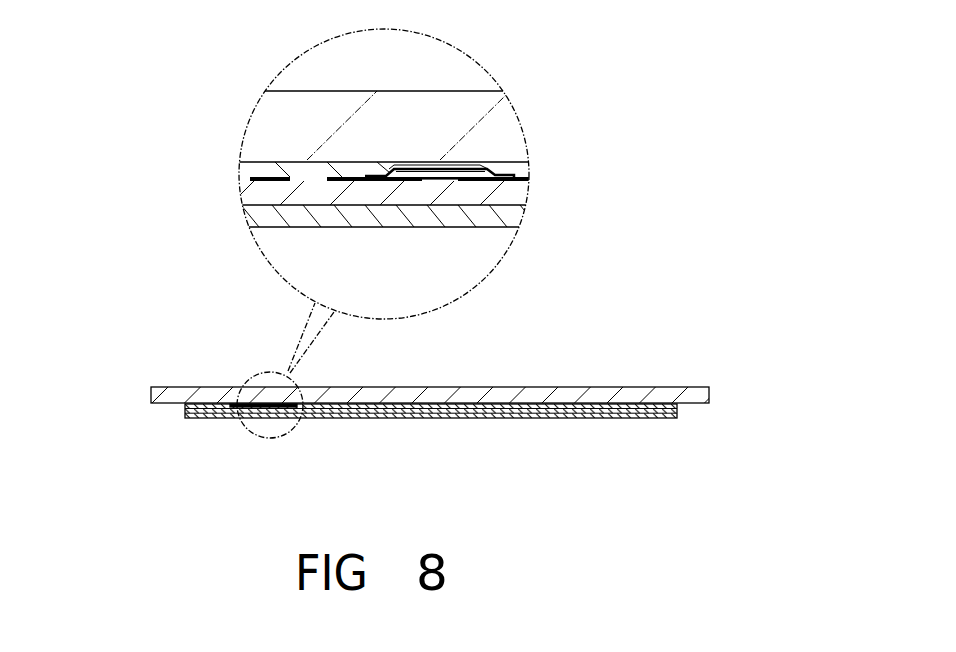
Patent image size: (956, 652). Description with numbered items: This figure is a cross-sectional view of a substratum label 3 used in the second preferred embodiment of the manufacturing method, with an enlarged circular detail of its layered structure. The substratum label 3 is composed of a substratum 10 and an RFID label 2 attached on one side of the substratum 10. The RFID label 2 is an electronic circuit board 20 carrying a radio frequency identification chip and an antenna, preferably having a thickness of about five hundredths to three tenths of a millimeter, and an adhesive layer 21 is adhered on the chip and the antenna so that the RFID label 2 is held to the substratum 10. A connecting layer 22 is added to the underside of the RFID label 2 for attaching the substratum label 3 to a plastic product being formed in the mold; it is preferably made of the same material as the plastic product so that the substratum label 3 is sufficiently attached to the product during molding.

The substratum label 3 is at (298, 88).
The substratum 10 is at (278, 132).
The RFID label 2 is at (258, 195).
The adhesive layer 21 is at (248, 168).
The electronic circuit board 20 is at (315, 197).
The connecting layer 22 is at (503, 217).